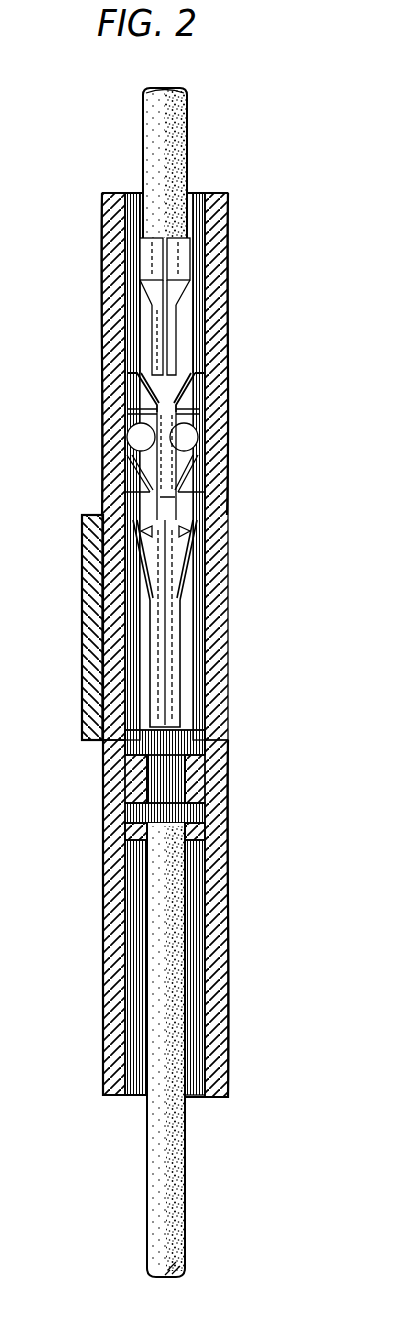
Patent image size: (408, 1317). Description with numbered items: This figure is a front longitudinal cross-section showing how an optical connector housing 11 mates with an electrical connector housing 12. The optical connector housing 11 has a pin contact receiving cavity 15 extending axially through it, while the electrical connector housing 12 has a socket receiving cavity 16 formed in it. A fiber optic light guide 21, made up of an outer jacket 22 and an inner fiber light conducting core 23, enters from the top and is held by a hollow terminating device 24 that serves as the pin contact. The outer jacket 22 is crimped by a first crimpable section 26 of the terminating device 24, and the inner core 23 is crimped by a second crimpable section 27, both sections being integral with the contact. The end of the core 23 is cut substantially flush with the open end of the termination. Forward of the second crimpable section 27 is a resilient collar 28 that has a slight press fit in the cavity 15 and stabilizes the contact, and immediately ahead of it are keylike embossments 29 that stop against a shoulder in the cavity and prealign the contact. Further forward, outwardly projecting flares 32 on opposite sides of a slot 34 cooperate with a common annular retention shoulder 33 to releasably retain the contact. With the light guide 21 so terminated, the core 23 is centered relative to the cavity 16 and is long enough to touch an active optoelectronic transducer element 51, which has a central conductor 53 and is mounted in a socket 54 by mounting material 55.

The optical connector housing 11 is at (82, 618).
The electrical connector housing 12 is at (228, 893).
The pin contact receiving cavity 15 is at (195, 337).
The socket receiving cavity 16 is at (204, 964).
The fiber optic light guide 21 is at (205, 117).
The outer jacket 22 is at (188, 148).
The inner fiber light conducting core 23 is at (165, 497).
The terminating device 24 is at (138, 437).
The first crimpable section 26 is at (178, 263).
The second crimpable section 27 is at (160, 333).
The resilient collar 28 is at (190, 437).
The keylike embossments 29 is at (200, 478).
The retention flares 32 is at (183, 541).
The annular retention shoulder 33 is at (180, 538).
The slot 34 is at (165, 626).
The optoelectronic transducer element 51 is at (158, 771).
The central conductor 53 is at (165, 1160).
The socket 54 is at (127, 836).
The mounting material 55 is at (205, 830).